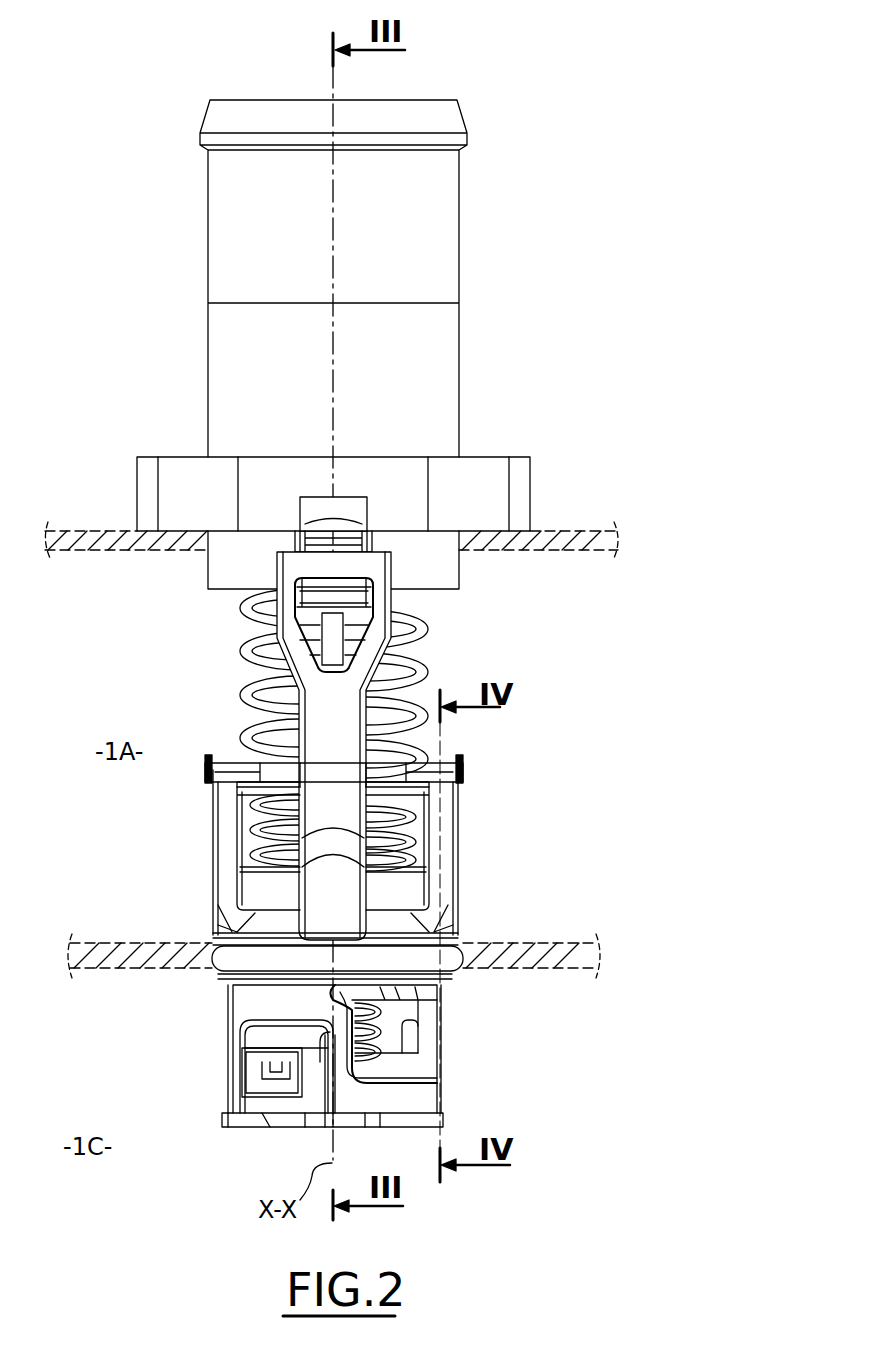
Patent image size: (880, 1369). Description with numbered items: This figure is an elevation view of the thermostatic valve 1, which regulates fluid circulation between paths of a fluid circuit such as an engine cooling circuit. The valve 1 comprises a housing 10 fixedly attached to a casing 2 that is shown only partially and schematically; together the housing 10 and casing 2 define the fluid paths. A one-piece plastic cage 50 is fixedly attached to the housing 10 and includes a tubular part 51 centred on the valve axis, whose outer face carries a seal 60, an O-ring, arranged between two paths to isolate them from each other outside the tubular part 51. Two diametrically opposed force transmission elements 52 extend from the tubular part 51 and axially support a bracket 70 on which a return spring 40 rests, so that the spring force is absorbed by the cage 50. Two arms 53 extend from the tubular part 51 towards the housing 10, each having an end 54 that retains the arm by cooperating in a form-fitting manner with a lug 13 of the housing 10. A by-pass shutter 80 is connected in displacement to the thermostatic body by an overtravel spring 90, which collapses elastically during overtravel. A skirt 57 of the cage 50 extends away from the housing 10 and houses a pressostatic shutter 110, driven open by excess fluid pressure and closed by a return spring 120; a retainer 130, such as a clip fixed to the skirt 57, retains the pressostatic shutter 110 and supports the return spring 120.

The thermostatic valve 1 is at (160, 232).
The casing 2 is at (92, 520).
The housing 10 is at (499, 445).
The lug 13 is at (312, 591).
The return spring 40 is at (222, 645).
The cage 50 is at (200, 985).
The tubular part 51 is at (453, 937).
The force transmission elements 52 is at (231, 843).
The arms 53 is at (344, 770).
The end 54 is at (380, 598).
The skirt 57 is at (260, 1003).
The seal 60 is at (226, 988).
The bracket 70 is at (215, 738).
The by-pass shutter 80 is at (224, 877).
The overtravel spring 90 is at (240, 815).
The pressostatic shutter 110 is at (440, 994).
The return spring 120 is at (418, 1060).
The retainer 130 is at (232, 1148).